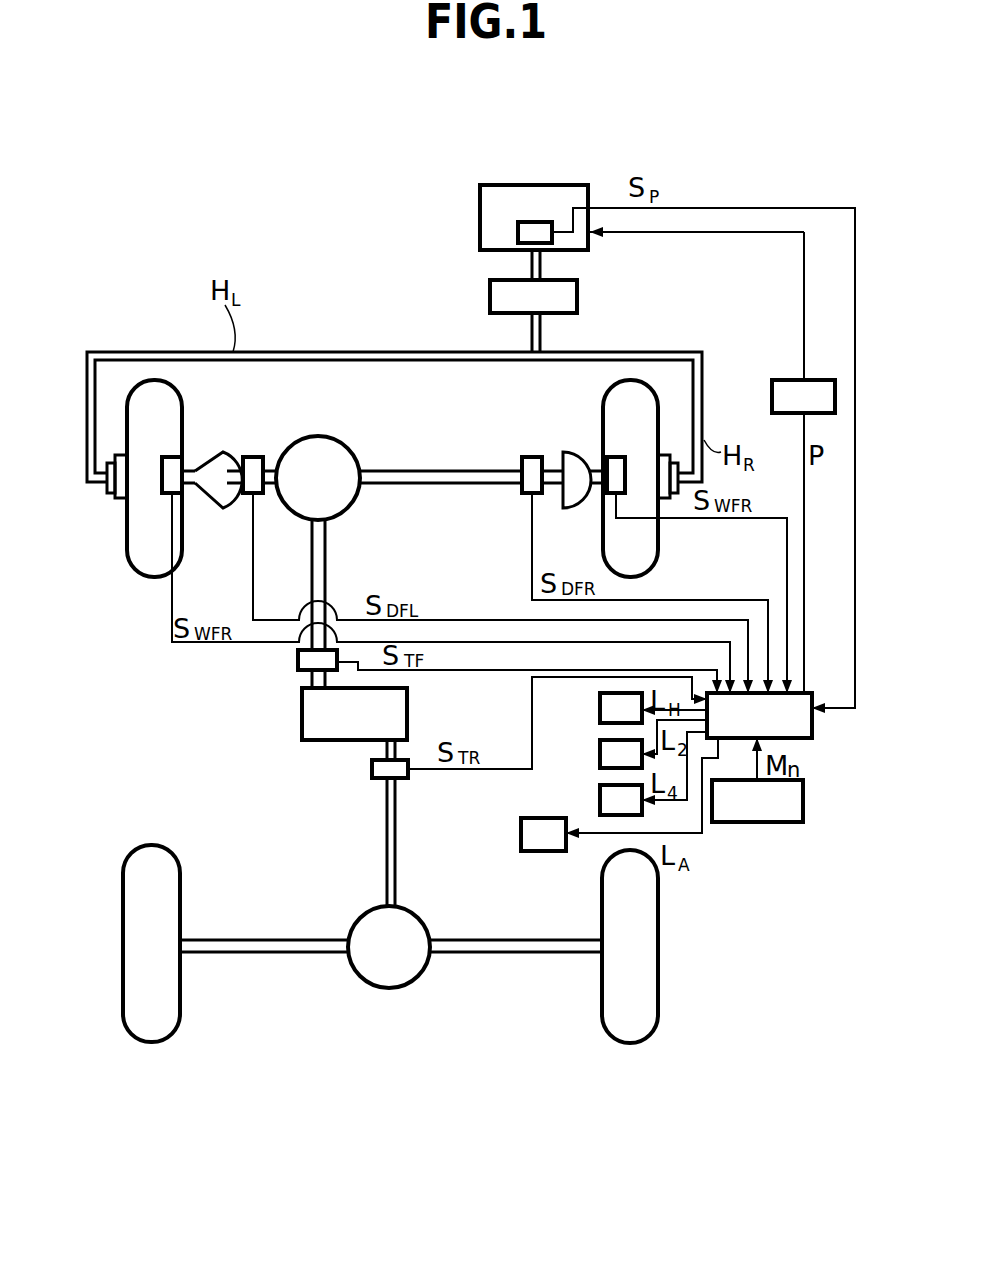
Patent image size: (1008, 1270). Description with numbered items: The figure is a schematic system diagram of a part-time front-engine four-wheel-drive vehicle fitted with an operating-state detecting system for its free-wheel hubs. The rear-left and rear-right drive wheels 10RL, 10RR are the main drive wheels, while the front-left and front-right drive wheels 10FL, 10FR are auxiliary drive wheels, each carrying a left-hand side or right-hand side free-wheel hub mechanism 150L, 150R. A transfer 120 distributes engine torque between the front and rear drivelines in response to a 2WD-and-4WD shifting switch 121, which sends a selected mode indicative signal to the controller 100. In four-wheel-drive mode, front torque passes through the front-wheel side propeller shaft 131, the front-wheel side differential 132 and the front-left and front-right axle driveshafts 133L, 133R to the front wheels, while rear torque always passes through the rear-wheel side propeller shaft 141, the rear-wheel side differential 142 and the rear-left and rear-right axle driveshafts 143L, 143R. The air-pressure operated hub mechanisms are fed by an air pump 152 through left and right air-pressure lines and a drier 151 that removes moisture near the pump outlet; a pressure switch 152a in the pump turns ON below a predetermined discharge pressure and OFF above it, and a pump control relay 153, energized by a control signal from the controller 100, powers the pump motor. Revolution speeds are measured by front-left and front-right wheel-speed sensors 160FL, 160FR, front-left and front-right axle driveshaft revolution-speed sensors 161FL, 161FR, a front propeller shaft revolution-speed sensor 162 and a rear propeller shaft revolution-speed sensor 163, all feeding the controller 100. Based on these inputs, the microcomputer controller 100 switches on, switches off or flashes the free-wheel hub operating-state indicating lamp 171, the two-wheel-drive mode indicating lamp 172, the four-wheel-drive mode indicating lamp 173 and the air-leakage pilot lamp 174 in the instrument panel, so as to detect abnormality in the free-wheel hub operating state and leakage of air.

The front-left drive wheel 10FL is at (135, 550).
The front-right drive wheel 10FR is at (658, 548).
The rear-left drive wheel 10RL is at (153, 1042).
The rear-right drive wheel 10RR is at (658, 965).
The controller 100 is at (812, 722).
The transfer 120 is at (302, 705).
The 2WD-and-4WD shifting switch 121 is at (803, 800).
The front-wheel side propeller shaft 131 is at (325, 560).
The front-wheel side differential 132 is at (355, 455).
The front-left axle driveshaft 133L is at (220, 505).
The front-right axle driveshaft 133R is at (455, 484).
The rear-wheel side propeller shaft 141 is at (387, 838).
The rear-wheel side differential 142 is at (410, 988).
The rear-left axle driveshaft 143L is at (252, 955).
The rear-right axle driveshaft 143R is at (522, 955).
The left-hand side free-wheel hub mechanism 150L is at (113, 455).
The right-hand side free-wheel hub mechanism 150R is at (674, 455).
The drier 151 is at (577, 297).
The air pump 152 is at (555, 185).
The pressure switch 152a is at (518, 238).
The pump control relay 153 is at (788, 380).
The front-left wheel-speed sensor 160FL is at (172, 457).
The front-right wheel-speed sensor 160FR is at (616, 457).
The front-left axle driveshaft revolution-speed sensor 161FL is at (253, 457).
The front-right axle driveshaft revolution-speed sensor 161FR is at (532, 457).
The front propeller shaft revolution-speed sensor 162 is at (298, 657).
The rear propeller shaft revolution-speed sensor 163 is at (372, 770).
The free-wheel hub operating-state indicating lamp 171 is at (600, 705).
The two-wheel-drive mode indicating lamp 172 is at (600, 752).
The four-wheel-drive mode indicating lamp 173 is at (600, 800).
The air-leakage pilot lamp 174 is at (521, 835).